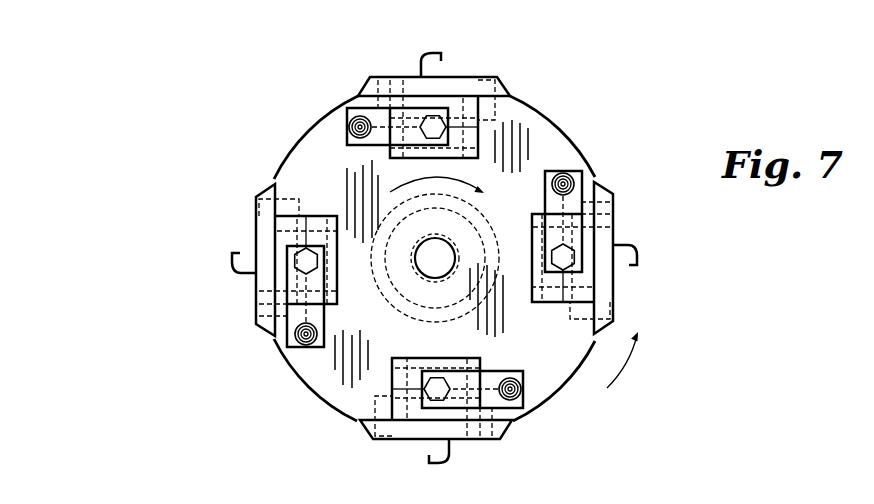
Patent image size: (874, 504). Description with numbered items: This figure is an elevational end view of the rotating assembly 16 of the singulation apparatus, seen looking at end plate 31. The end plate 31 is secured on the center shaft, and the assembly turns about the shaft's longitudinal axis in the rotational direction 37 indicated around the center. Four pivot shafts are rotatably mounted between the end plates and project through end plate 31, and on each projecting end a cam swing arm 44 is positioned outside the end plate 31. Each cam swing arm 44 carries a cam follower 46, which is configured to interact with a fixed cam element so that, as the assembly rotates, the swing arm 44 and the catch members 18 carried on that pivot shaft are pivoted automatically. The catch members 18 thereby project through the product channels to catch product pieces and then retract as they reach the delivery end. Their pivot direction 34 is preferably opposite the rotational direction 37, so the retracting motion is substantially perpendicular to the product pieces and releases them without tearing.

The rotating assembly 16 is at (275, 109).
The catch member 18 is at (440, 57).
The end plate 31 is at (530, 128).
The pivot direction 34 is at (630, 358).
The rotational direction 37 is at (402, 183).
The cam swing arm 44 is at (385, 118).
The cam follower 46 is at (347, 118).